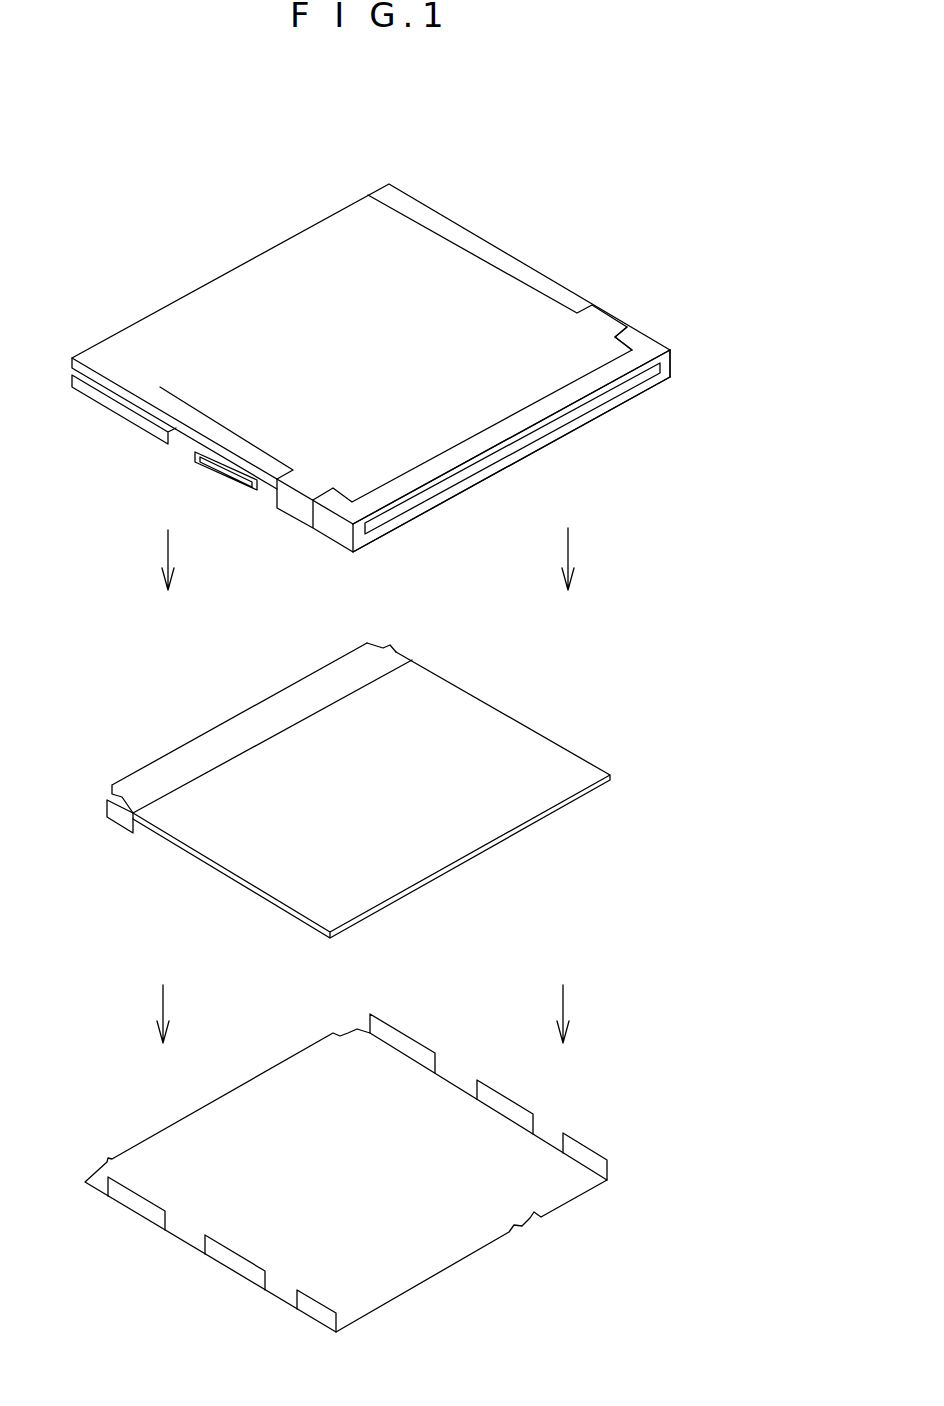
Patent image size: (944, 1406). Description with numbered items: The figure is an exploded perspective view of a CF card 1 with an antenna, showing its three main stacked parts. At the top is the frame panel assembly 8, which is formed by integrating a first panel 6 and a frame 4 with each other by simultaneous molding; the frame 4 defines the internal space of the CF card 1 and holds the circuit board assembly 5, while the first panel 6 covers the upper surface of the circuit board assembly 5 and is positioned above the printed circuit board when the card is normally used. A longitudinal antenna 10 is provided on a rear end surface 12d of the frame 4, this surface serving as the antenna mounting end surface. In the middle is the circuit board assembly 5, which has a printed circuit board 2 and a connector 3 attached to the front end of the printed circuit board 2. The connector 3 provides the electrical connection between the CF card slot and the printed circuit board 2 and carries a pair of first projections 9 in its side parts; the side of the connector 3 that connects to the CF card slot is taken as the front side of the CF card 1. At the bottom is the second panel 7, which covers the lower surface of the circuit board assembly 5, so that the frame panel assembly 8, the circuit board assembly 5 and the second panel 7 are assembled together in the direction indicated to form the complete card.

The CF card 1 is at (697, 491).
The printed circuit board 2 is at (533, 793).
The connector 3 is at (225, 743).
The frame 4 is at (650, 347).
The circuit board assembly 5 is at (577, 692).
The first panel 6 is at (277, 293).
The second panel 7 is at (553, 1190).
The frame panel assembly 8 is at (526, 201).
The first projections 9 is at (388, 653).
The antenna 10 is at (497, 458).
The rear end surface 12d is at (617, 405).